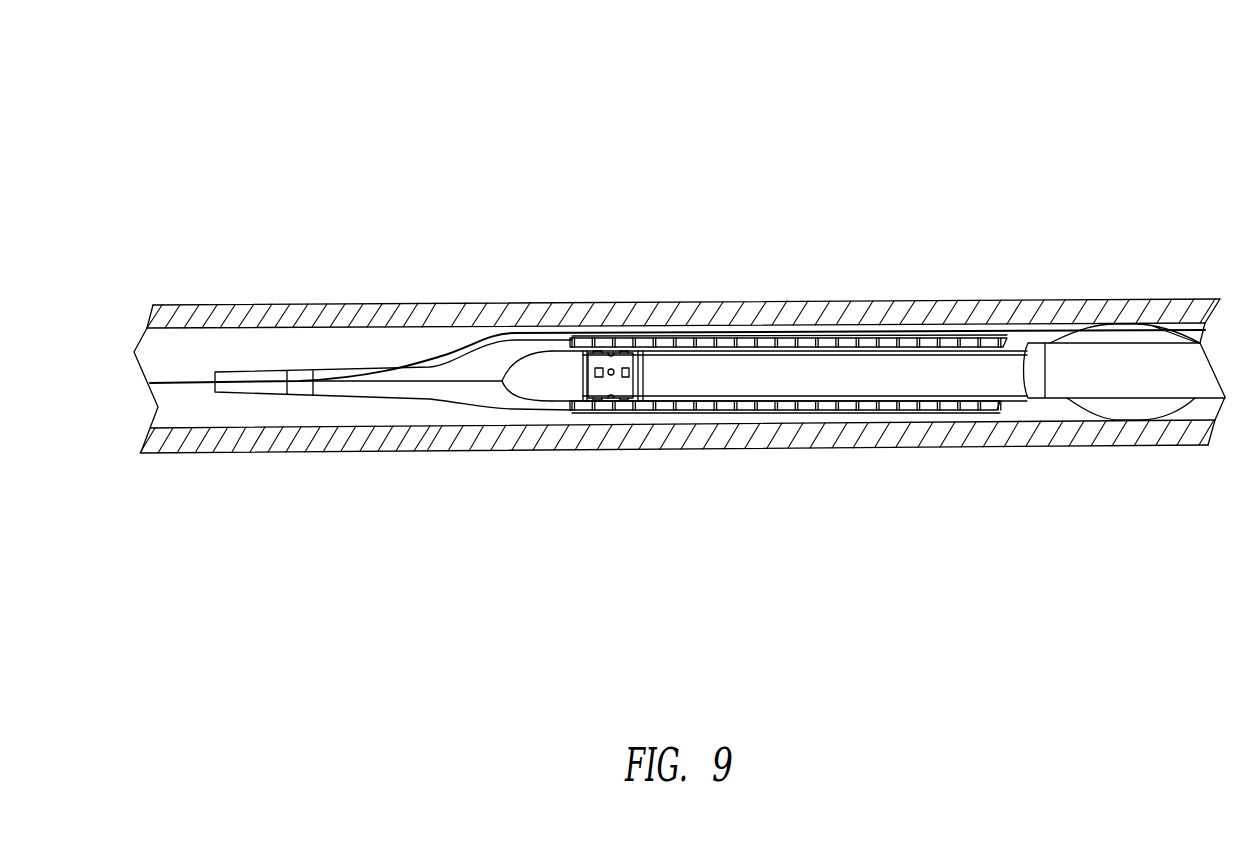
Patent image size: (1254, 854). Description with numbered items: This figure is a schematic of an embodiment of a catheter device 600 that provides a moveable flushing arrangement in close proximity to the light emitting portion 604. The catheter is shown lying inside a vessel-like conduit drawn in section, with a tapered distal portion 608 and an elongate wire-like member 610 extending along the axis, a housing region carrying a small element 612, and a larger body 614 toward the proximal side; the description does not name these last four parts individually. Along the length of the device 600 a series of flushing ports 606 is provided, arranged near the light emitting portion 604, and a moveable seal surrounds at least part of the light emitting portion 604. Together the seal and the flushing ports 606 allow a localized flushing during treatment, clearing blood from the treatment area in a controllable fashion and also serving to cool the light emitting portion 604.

The device 600 is at (233, 120).
The light emitting portion 604 is at (788, 313).
The flushing ports 606 is at (604, 383).
The tapered distal tip body 608 is at (298, 367).
The guide wire 610 is at (192, 385).
The transducer element 612 is at (631, 372).
The proximal body / balloon 614 is at (1083, 333).